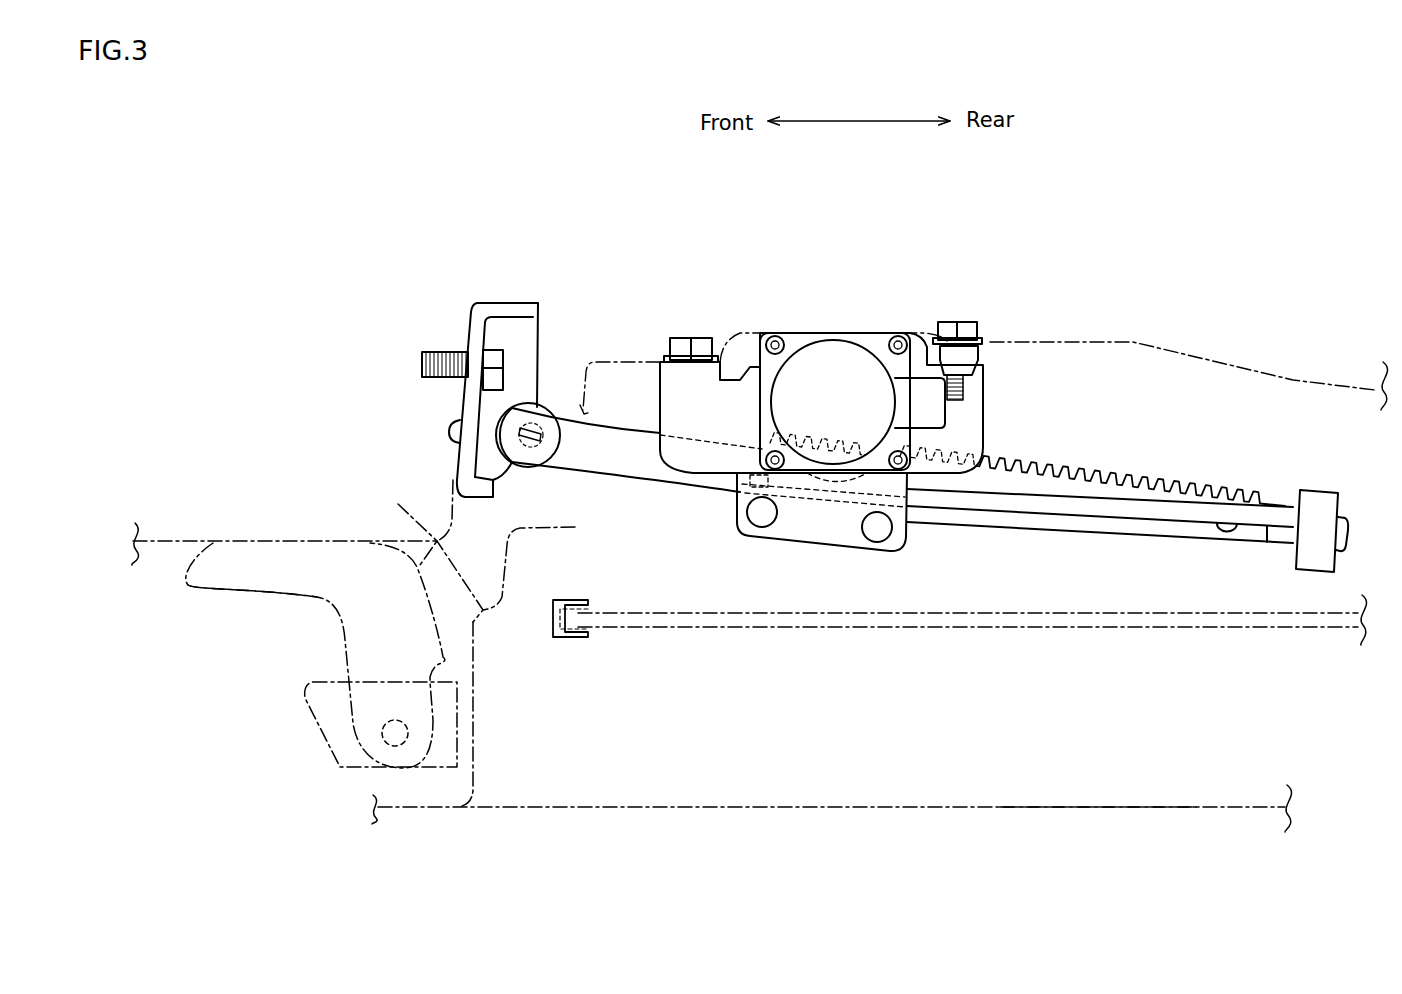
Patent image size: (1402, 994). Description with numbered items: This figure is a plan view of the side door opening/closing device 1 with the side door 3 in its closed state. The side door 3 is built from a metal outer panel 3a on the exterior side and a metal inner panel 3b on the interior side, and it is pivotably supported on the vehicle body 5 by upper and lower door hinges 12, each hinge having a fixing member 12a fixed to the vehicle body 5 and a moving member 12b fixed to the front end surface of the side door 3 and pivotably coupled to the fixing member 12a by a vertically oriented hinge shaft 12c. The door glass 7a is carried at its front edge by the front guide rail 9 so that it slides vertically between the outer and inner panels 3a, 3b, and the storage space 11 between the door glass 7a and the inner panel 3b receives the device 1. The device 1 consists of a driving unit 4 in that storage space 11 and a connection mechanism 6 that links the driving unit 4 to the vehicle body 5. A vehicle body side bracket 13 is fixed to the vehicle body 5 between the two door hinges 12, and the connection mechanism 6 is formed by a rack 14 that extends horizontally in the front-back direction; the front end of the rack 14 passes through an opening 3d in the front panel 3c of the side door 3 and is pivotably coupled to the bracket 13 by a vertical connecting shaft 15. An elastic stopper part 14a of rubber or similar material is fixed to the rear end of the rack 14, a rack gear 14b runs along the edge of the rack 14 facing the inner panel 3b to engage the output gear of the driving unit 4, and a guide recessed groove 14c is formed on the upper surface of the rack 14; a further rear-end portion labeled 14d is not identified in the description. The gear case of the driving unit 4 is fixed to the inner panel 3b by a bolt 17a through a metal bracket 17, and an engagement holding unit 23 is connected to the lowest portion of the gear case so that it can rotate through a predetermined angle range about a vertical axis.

The side door opening/closing device 1 is at (1013, 422).
The side door 3 is at (858, 808).
The outer panel 3a is at (1137, 808).
The inner panel 3b is at (1217, 362).
The front panel 3c is at (421, 554).
The opening 3d is at (572, 477).
The driving unit 4 is at (814, 330).
The vehicle body 5 is at (163, 542).
The connection mechanism 6 is at (1238, 556).
The door glass 7a is at (1096, 630).
The front guide rail 9 is at (580, 640).
The storage space 11 is at (1066, 593).
The door hinge 12 is at (316, 720).
The fixing member 12a is at (230, 589).
The moving member 12b is at (357, 770).
The hinge shaft 12c is at (382, 733).
The vehicle body side bracket 13 is at (463, 402).
The rack 14 is at (988, 526).
The stopper part 14a is at (1320, 490).
The rack gear 14b is at (1187, 483).
The guide recessed groove 14c is at (1233, 522).
The rack end portion 14d is at (1142, 544).
The connecting shaft 15 is at (500, 457).
The bracket 17 is at (693, 475).
The bolt 17a is at (680, 337).
The engagement holding unit 23 is at (822, 540).